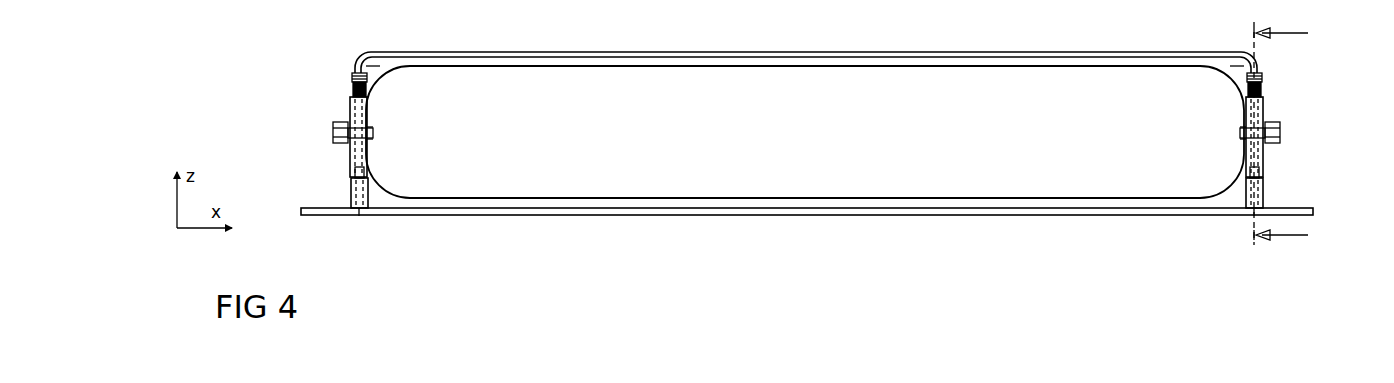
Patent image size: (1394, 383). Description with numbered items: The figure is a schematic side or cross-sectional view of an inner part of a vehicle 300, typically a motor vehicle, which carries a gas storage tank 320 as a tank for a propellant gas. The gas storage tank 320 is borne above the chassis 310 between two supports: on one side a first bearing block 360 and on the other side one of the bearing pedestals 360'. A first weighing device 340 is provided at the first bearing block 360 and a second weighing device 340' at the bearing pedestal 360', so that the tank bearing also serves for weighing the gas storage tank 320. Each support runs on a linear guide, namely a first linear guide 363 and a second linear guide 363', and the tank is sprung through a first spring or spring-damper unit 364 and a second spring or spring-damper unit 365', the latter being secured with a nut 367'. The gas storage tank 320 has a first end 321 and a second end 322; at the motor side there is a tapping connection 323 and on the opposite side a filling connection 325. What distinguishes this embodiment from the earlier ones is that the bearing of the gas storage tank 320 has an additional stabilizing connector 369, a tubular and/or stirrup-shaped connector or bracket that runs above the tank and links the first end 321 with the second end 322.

The vehicle 300 is at (798, 24).
The chassis 310 is at (876, 215).
The gas storage tank 320 is at (798, 143).
The first end of the gas storage tank 321 is at (1238, 64).
The second end of the gas storage tank 322 is at (381, 64).
The tapping connection of the gas storage tank 323 is at (1288, 133).
The filling connection of the gas storage tank 325 is at (332, 133).
The first weighing device 340 is at (1291, 189).
The second weighing device 340' is at (315, 192).
The first bearing block 360 is at (1291, 134).
The bearing pedestal 360' is at (409, 137).
The first linear guide 363 is at (1234, 246).
The second linear guide 363' is at (361, 246).
The first spring/spring-damper unit 364 is at (1265, 92).
The second spring/spring-damper unit 365' is at (313, 81).
The nut 367' is at (339, 47).
The connector 369 is at (912, 58).